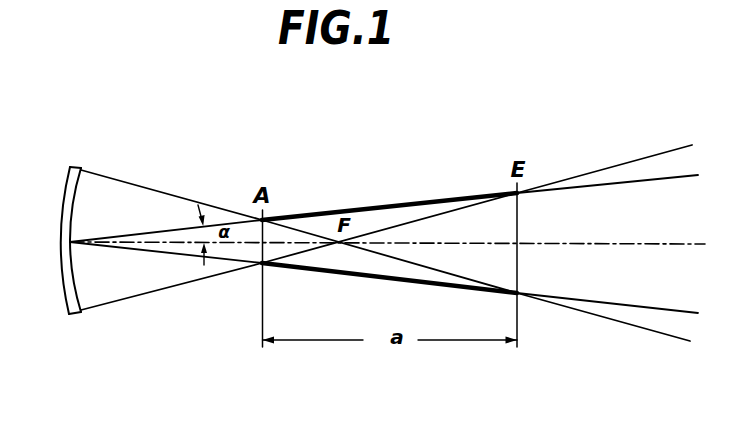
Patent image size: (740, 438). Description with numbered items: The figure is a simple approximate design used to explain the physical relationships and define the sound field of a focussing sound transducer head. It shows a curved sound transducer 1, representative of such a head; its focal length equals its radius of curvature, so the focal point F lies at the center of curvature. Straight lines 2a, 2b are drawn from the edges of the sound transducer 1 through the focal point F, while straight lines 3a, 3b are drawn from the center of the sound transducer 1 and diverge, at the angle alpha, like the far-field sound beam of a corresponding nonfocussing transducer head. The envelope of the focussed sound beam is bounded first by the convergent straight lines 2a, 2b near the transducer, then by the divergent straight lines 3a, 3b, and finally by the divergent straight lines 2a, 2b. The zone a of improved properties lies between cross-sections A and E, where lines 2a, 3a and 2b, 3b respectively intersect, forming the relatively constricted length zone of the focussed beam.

The curved sound transducer 1 is at (63, 287).
The straight line 2a is at (602, 170).
The straight line 2b is at (590, 315).
The straight line 3a is at (638, 182).
The straight line 3b is at (632, 305).